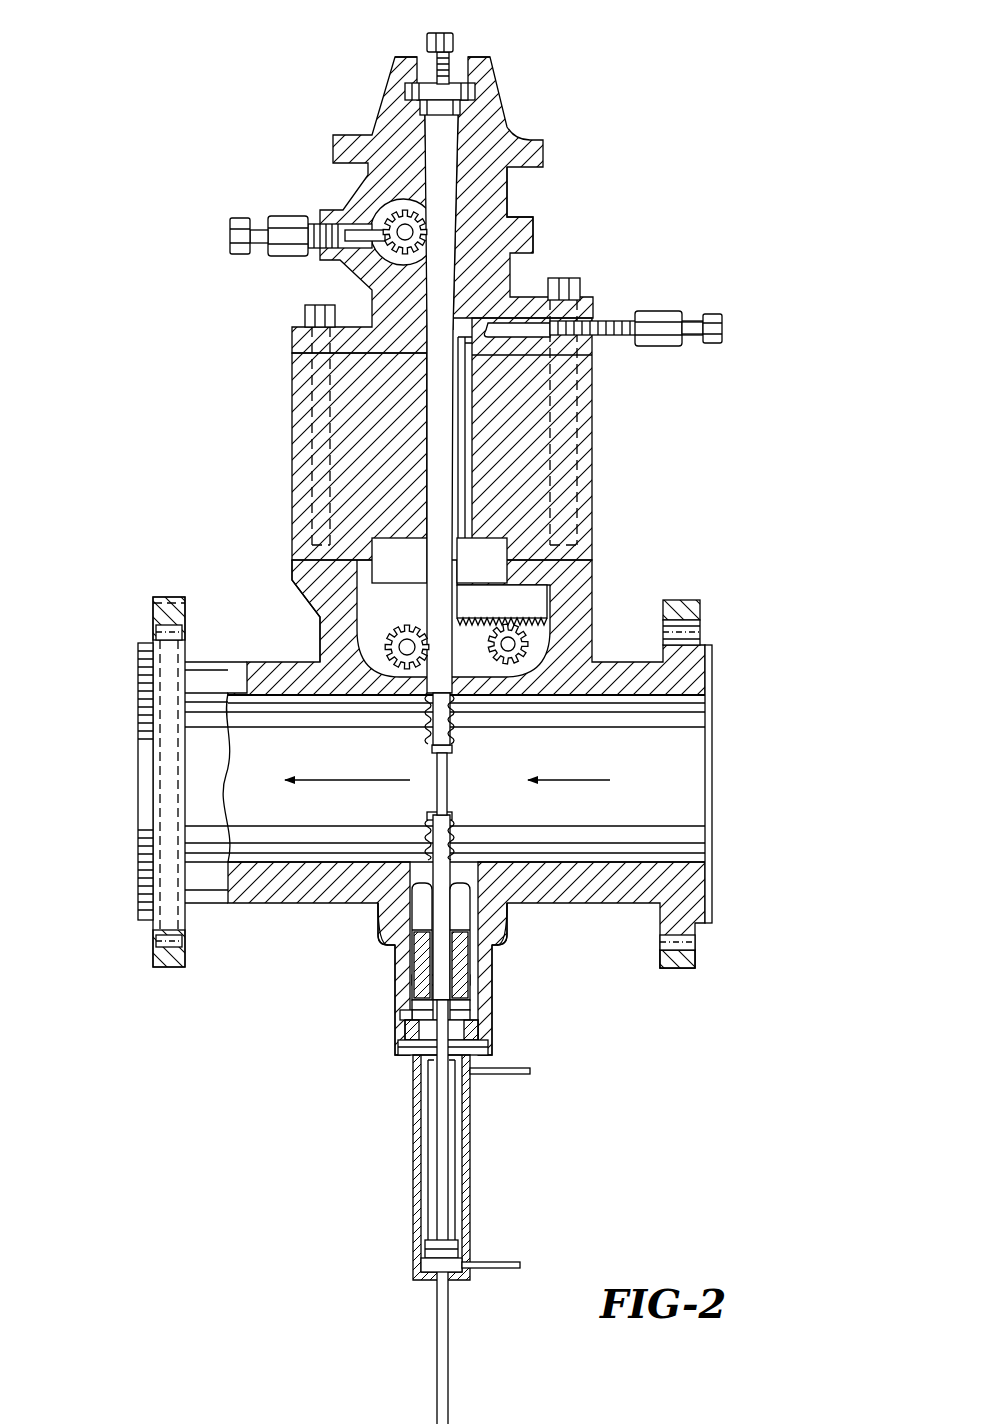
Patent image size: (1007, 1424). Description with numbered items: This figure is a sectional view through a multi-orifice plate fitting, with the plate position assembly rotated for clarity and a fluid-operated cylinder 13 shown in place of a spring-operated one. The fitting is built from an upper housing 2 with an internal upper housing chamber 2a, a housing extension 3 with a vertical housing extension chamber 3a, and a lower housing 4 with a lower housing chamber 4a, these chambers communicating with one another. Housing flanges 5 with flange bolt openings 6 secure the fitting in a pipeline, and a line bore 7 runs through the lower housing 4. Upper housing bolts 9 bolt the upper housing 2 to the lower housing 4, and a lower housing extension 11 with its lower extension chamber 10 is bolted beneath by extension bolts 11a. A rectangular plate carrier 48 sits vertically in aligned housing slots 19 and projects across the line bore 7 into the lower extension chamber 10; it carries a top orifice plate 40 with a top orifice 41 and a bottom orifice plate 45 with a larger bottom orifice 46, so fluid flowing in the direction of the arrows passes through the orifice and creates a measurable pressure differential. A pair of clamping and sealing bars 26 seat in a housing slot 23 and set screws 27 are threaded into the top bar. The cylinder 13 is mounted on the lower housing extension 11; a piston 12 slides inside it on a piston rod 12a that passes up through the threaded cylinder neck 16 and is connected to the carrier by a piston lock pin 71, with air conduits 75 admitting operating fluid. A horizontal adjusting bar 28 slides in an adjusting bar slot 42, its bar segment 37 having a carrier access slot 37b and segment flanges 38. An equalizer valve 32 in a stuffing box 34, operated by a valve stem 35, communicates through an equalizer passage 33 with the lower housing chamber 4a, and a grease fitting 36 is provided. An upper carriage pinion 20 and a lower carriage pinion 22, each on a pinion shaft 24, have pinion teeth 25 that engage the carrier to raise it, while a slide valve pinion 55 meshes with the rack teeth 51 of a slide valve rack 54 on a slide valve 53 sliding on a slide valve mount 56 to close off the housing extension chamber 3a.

The upper housing 2 is at (358, 168).
The upper housing chamber 2a is at (475, 205).
The housing extension 3 is at (291, 440).
The housing extension chamber 3a is at (438, 490).
The lower housing 4 is at (594, 580).
The lower housing chamber 4a is at (375, 597).
The housing flanges 5 is at (168, 596).
The flange bolt openings 6 is at (184, 636).
The line bore 7 is at (690, 756).
The upper housing bolts 9 is at (305, 316).
The lower extension chamber 10 is at (400, 967).
The lower housing extension 11 is at (388, 955).
The extension bolts 11a is at (385, 928).
The piston 12 is at (425, 1242).
The piston rod 12a is at (436, 1075).
The cylinder 13 is at (413, 1158).
The threaded cylinder neck 16 is at (470, 1020).
The housing slots 19 is at (424, 732).
The upper carriage pinion 20 is at (450, 240).
The lower carriage pinion 22 is at (352, 698).
The housing slot 23 is at (400, 98).
The pinion shaft 24 is at (406, 245).
The pinion teeth 25 is at (374, 252).
The clamping and sealing bars 26 is at (482, 98).
The set screws 27 is at (456, 47).
The horizontal adjusting bar 28 is at (425, 1065).
The equalizer valve 32 is at (656, 312).
The equalizer passage 33 is at (487, 338).
The stuffing box 34 is at (282, 257).
The valve stem 35 is at (231, 240).
The grease fitting 36 is at (238, 220).
The bar segment 37 is at (470, 1002).
The carrier access slot 37b is at (408, 1025).
The segment flanges 38 is at (408, 1045).
The top orifice plate 40 is at (450, 775).
The top orifice 41 is at (422, 788).
The adjusting bar slot 42 is at (408, 1012).
The bottom orifice plate 45 is at (472, 958).
The bottom orifice 46 is at (378, 826).
The plate carrier 48 is at (455, 755).
The rack teeth 51 is at (427, 565).
The slide valve 53 is at (481, 613).
The slide valve rack 54 is at (520, 672).
The slide valve pinion 55 is at (530, 642).
The slide valve mount 56 is at (493, 572).
The piston lock pin 71 is at (470, 986).
The air conduits 75 is at (505, 1075).